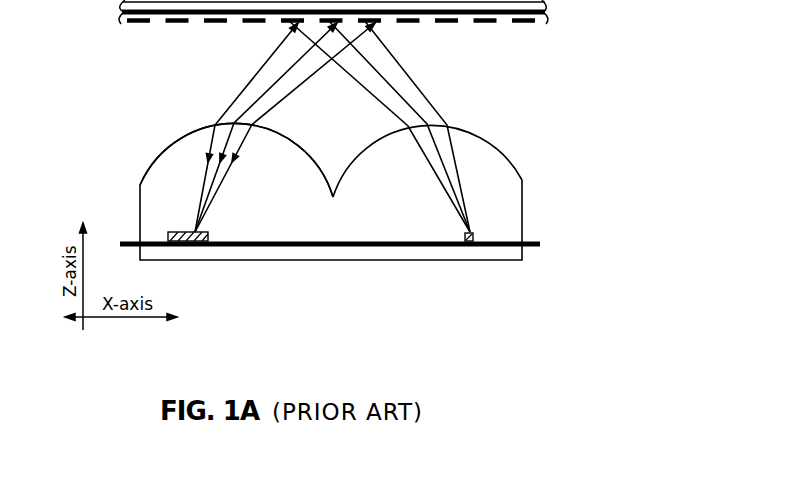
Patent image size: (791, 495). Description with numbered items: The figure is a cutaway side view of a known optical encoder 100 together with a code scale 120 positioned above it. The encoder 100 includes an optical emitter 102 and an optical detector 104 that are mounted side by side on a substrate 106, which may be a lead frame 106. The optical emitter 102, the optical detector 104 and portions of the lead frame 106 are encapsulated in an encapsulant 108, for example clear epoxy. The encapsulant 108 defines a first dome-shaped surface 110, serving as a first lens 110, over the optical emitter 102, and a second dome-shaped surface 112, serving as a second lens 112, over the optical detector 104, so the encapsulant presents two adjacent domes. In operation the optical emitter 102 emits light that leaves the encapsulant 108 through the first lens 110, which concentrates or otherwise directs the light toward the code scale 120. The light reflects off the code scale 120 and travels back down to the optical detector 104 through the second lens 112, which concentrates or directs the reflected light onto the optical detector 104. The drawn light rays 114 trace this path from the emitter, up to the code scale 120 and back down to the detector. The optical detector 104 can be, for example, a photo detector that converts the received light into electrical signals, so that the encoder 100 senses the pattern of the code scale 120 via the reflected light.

The optical encoder 100 is at (335, 201).
The optical emitter 102 is at (463, 231).
The optical detector 104 is at (209, 233).
The substrate 106 is at (340, 248).
The encapsulant 108 is at (160, 177).
The first dome-shaped surface 110 is at (489, 135).
The second dome-shaped surface 112 is at (188, 127).
The light rays 114 is at (415, 83).
The code scale 120 is at (553, 37).